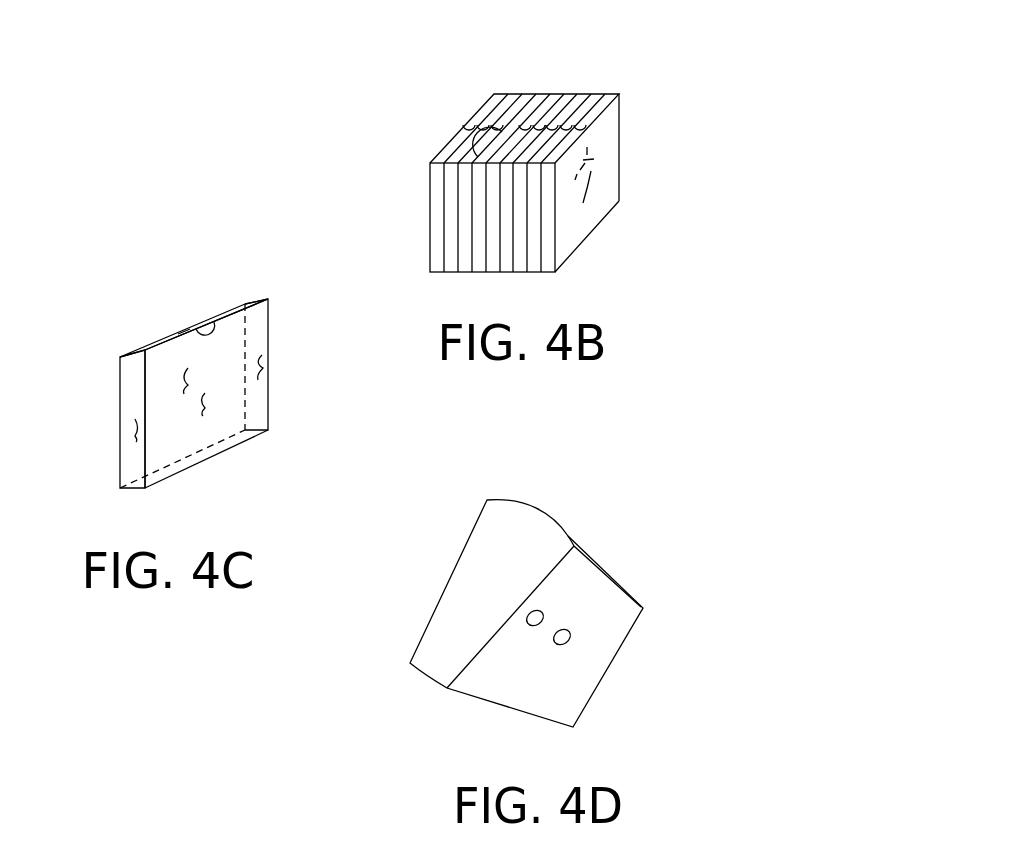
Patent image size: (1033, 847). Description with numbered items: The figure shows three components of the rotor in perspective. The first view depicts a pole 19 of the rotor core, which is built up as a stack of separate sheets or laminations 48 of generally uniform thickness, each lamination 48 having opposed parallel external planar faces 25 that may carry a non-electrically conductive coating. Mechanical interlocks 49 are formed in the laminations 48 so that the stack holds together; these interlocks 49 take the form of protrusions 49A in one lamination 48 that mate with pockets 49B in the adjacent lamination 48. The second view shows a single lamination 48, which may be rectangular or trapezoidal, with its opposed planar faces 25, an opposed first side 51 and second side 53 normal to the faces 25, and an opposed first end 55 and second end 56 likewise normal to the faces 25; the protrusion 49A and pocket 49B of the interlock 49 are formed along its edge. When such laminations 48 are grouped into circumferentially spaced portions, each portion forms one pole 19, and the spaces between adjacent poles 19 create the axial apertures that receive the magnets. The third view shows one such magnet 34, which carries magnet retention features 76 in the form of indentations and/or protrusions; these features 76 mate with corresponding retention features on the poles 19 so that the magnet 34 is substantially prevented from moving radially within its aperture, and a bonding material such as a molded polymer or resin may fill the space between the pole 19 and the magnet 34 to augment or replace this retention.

In FIG. 4B, the pole 19 is at (383, 147).
In FIG. 4B, the external planar faces 25 is at (603, 155).
In FIG. 4C, the external planar faces 25 is at (173, 377).
In FIG. 4D, the magnet 34 is at (385, 650).
In FIG. 4B, the lamination 48 is at (583, 238).
In FIG. 4C, the lamination 48 is at (66, 256).
In FIG. 4B, the mechanical interlocks 49 is at (558, 105).
In FIG. 4B, the protrusions 49A is at (478, 157).
In FIG. 4C, the protrusions 49A is at (213, 304).
In FIG. 4B, the pockets 49B is at (463, 120).
In FIG. 4C, the pockets 49B is at (187, 311).
In FIG. 4C, the first side 51 is at (160, 342).
In FIG. 4C, the second side 53 is at (167, 482).
In FIG. 4C, the first end 55 is at (133, 428).
In FIG. 4C, the second end 56 is at (267, 368).
In FIG. 4D, the magnet retention features 76 is at (543, 608).